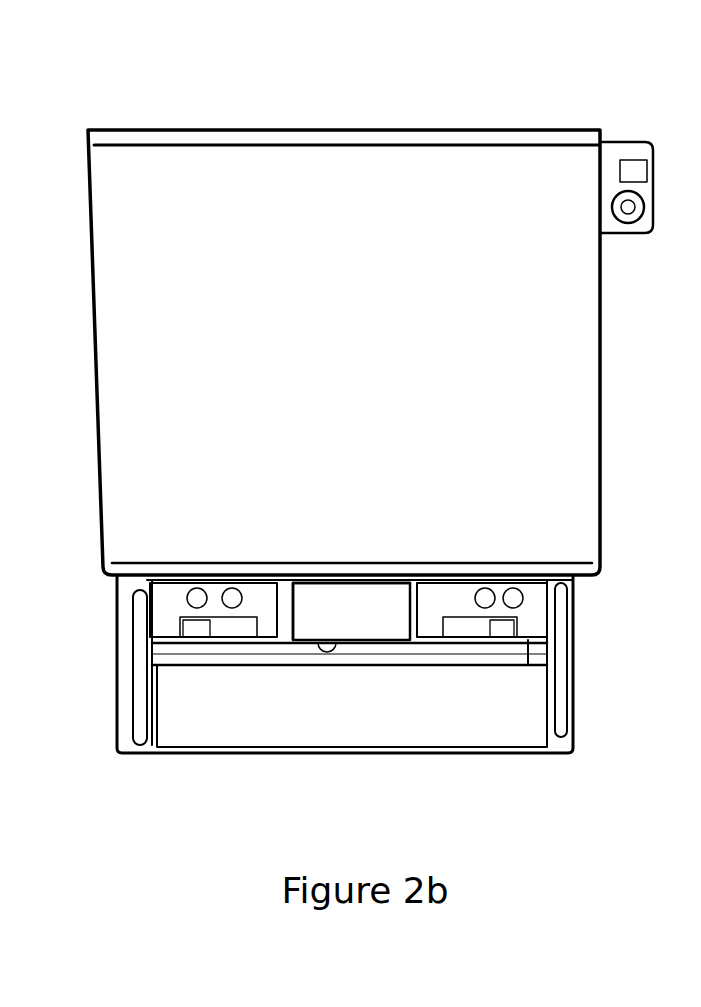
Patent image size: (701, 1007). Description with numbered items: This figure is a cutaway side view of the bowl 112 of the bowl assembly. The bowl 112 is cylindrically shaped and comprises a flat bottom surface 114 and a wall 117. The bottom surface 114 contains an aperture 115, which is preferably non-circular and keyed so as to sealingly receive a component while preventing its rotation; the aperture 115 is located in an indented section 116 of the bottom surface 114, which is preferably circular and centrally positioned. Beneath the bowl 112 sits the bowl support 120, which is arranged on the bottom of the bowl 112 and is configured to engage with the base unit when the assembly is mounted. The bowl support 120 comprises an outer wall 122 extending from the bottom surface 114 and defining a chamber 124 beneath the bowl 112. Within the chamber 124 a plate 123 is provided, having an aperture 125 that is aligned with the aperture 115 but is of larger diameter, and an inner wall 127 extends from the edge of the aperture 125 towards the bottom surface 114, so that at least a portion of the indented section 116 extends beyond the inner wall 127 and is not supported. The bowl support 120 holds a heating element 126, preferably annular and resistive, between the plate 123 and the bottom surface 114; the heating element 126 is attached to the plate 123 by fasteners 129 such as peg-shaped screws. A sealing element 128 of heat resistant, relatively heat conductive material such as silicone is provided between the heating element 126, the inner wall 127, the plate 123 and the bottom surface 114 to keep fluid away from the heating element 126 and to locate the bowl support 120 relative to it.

The bowl 112 is at (92, 86).
The bottom surface 114 is at (528, 580).
The aperture 115 is at (365, 574).
The indented section 116 is at (396, 582).
The wall 117 is at (598, 402).
The bowl support 120 is at (597, 750).
The outer wall 122 is at (575, 668).
The plate 123 is at (198, 647).
The chamber 124 is at (282, 732).
The aperture 125 is at (395, 652).
The heating element 126 is at (213, 590).
The inner wall 127 is at (293, 627).
The sealing element 128 is at (280, 618).
The fasteners 129 is at (528, 642).